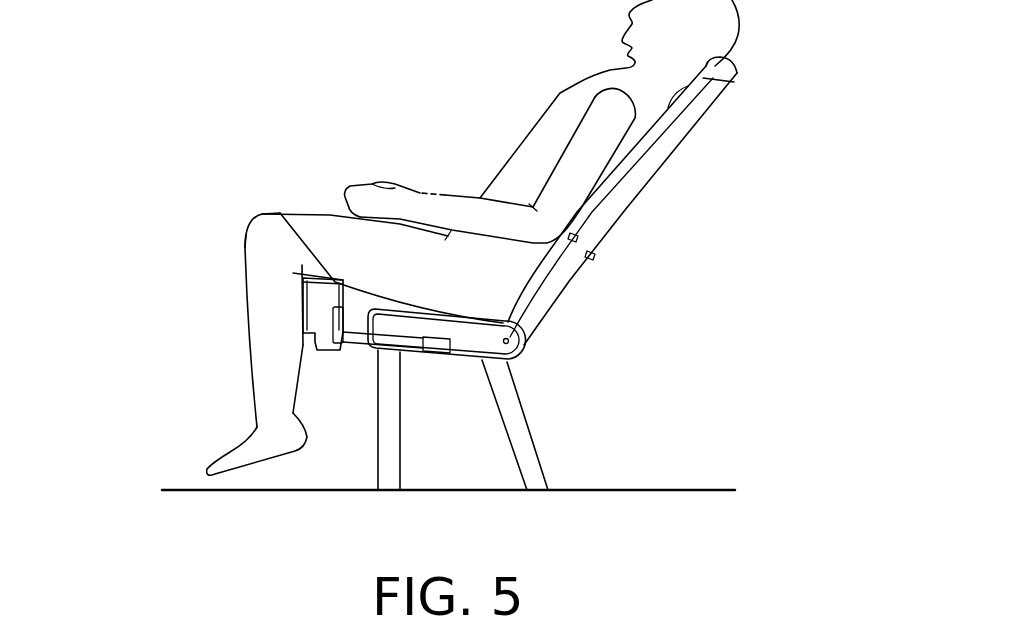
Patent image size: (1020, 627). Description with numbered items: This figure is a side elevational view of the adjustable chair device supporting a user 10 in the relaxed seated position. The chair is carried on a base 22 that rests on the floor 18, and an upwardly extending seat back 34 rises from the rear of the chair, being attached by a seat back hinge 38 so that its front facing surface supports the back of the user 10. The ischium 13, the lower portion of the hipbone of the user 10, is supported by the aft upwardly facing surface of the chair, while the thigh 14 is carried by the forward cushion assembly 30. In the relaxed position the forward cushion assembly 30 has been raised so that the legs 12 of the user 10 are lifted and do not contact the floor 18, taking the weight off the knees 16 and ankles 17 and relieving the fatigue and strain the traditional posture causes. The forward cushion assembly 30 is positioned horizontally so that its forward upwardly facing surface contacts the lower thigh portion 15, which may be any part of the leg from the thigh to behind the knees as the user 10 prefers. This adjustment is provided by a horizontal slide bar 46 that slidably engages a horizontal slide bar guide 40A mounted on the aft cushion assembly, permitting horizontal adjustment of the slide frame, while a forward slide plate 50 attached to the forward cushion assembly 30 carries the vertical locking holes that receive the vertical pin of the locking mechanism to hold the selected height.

The user 10 is at (567, 113).
The legs 12 is at (267, 380).
The ischium 13 is at (468, 315).
The thigh 14 is at (372, 288).
The lower thigh portion 15 is at (280, 213).
The knees 16 is at (244, 226).
The ankles 17 is at (273, 417).
The floor 18 is at (328, 487).
The base 22 is at (490, 437).
The forward cushion assembly 30 is at (302, 296).
The upwardly extending seat back 34 is at (597, 233).
The seat back hinge 38 is at (510, 345).
The horizontal slide bar guide 40A is at (437, 345).
The horizontal slide bar 46 is at (355, 343).
The forward slide plate 50 is at (300, 323).